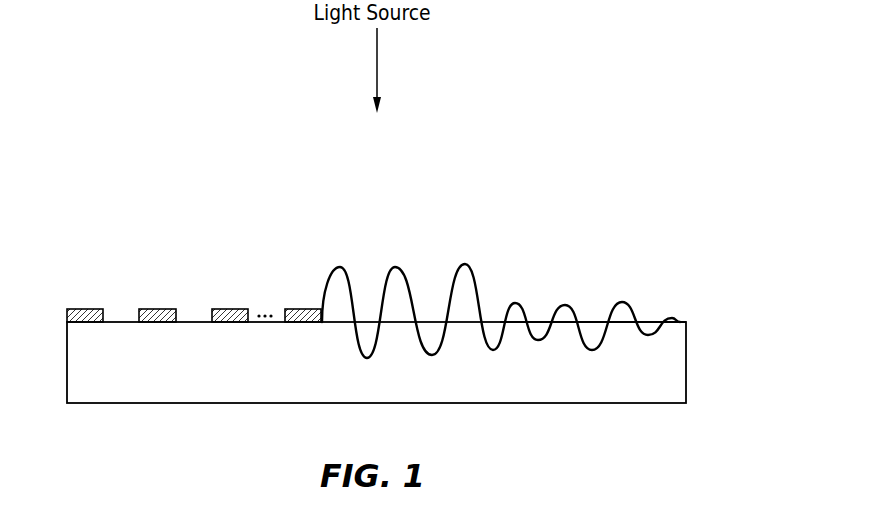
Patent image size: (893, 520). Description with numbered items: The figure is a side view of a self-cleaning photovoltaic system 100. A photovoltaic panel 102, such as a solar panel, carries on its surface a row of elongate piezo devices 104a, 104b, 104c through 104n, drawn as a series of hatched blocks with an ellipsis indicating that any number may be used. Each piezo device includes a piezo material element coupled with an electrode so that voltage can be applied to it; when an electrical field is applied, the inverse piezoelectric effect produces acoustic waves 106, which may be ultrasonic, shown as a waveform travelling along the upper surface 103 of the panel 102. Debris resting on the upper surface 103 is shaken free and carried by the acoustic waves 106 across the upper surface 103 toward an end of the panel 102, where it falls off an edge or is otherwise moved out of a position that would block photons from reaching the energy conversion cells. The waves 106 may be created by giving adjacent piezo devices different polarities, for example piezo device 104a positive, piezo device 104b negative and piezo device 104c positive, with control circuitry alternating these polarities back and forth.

The self-cleaning photovoltaic system 100 is at (144, 148).
The photovoltaic panel 102 is at (667, 366).
The upper surface 103 is at (590, 321).
The piezo device 104a is at (84, 307).
The piezo device 104b is at (158, 307).
The piezo device 104c is at (231, 307).
The piezo device 104n is at (304, 307).
The acoustic waves 106 is at (478, 278).